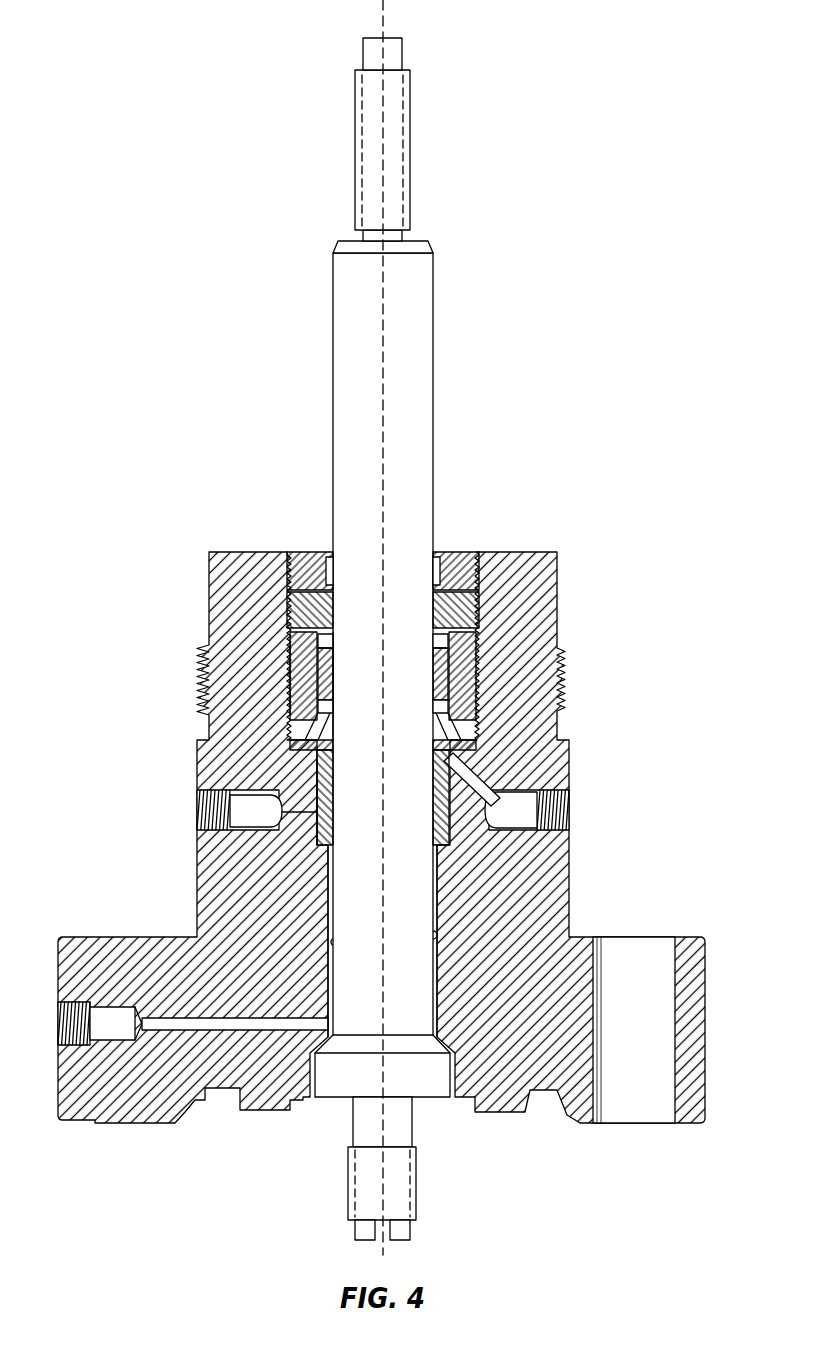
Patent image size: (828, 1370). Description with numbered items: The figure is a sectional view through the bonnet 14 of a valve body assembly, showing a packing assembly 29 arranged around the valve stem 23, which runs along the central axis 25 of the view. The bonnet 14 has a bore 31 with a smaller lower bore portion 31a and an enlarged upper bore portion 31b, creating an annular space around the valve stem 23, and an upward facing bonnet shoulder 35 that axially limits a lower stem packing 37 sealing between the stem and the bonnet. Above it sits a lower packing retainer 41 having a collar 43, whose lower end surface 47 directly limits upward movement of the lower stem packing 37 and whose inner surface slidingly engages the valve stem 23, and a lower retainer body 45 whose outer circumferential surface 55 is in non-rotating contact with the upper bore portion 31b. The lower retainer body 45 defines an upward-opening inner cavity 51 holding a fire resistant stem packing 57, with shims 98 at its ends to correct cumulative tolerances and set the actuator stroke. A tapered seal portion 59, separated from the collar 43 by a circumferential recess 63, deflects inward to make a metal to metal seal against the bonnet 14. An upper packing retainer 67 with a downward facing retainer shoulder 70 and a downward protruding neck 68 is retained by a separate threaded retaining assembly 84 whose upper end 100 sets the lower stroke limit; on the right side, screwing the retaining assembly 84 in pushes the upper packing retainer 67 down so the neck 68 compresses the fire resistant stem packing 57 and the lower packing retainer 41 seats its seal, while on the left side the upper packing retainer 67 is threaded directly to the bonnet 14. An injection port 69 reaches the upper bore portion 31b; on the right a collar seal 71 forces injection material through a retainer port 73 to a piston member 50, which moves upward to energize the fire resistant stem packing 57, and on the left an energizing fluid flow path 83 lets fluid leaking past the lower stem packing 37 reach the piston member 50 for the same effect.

The bonnet 14 is at (222, 585).
The valve stem 23 is at (420, 358).
The longitudinal axis 25 is at (386, 28).
The packing assembly 29 is at (381, 627).
The bore 31 is at (437, 935).
The lower bore portion 31a is at (335, 946).
The upper bore portion 31b is at (320, 822).
The bonnet shoulder 35 is at (335, 835).
The lower stem packing 37 is at (317, 817).
The lower packing retainer 41 is at (467, 712).
The collar 43 is at (310, 745).
The lower retainer body 45 is at (460, 655).
The lower end surface 47 is at (330, 772).
The piston member 50 is at (325, 723).
The inner cavity 51 is at (320, 673).
The outer circumferential surface 55 is at (293, 693).
The fire resistant stem packing 57 is at (440, 677).
The tapered seal portion 59 is at (447, 763).
The circumferential recess 63 is at (300, 743).
The upper packing retainer 67 is at (463, 607).
The downward protruding neck 68 is at (317, 630).
The injection port 69 is at (268, 797).
The retainer shoulder 70 is at (436, 640).
The collar seal 71 is at (533, 807).
The retainer port 73 is at (437, 722).
The energizing fluid flow path 83 is at (437, 897).
The retaining assembly 84 is at (388, 648).
The shims 98 is at (460, 645).
The upper end 100 is at (310, 552).